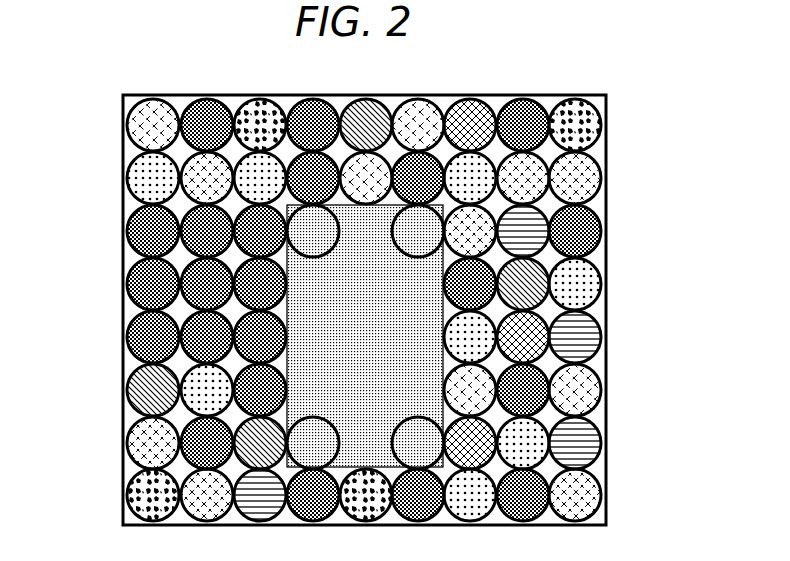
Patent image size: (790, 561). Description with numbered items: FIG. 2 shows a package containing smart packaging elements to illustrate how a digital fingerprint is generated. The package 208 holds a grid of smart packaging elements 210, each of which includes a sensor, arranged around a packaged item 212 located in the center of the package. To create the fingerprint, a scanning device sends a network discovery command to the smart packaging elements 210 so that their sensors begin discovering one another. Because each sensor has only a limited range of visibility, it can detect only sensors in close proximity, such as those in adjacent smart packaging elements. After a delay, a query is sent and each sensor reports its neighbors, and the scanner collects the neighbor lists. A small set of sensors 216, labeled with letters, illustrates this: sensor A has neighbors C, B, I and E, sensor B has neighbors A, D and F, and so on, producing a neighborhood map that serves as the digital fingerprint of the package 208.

The array of light sources 208 is at (607, 146).
The smart packaging element 210 is at (582, 286).
The packaged item 212 is at (410, 397).
The small set of sensors 216 is at (115, 208).